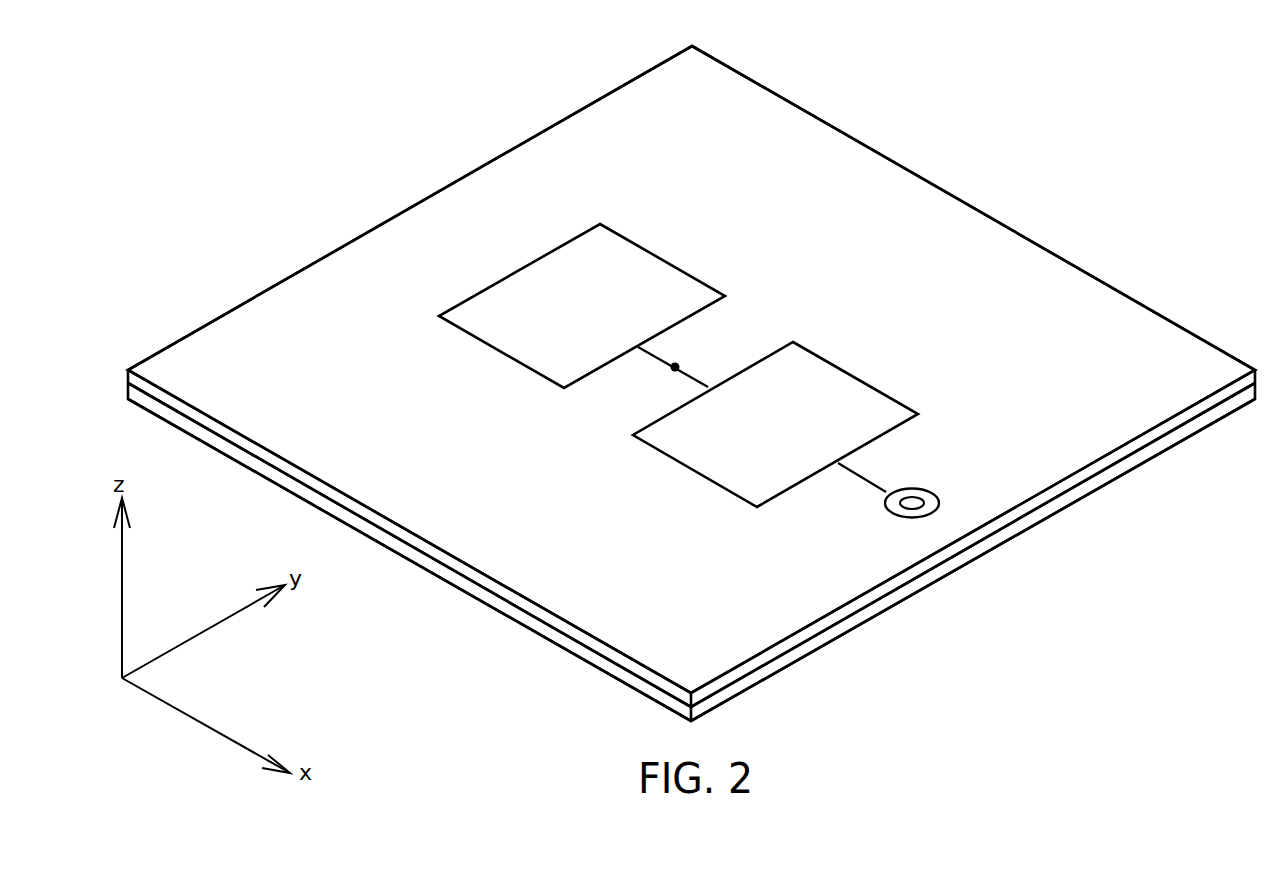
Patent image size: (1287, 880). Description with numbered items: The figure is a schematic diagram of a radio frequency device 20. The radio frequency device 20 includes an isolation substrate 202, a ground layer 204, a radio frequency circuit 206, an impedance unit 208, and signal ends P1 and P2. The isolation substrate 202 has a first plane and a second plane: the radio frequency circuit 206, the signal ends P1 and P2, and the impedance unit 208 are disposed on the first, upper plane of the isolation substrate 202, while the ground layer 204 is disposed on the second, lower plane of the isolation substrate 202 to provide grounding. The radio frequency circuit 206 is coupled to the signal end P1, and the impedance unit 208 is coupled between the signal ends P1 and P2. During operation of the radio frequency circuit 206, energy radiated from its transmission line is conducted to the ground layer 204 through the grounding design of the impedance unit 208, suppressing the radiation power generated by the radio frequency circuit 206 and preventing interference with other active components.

The radio frequency device 20 is at (1032, 107).
The isolation substrate 202 is at (1088, 302).
The ground layer 204 is at (1147, 453).
The radio frequency circuit 206 is at (512, 298).
The impedance unit 208 is at (824, 392).
The signal end P1 is at (675, 367).
The signal end P2 is at (928, 508).